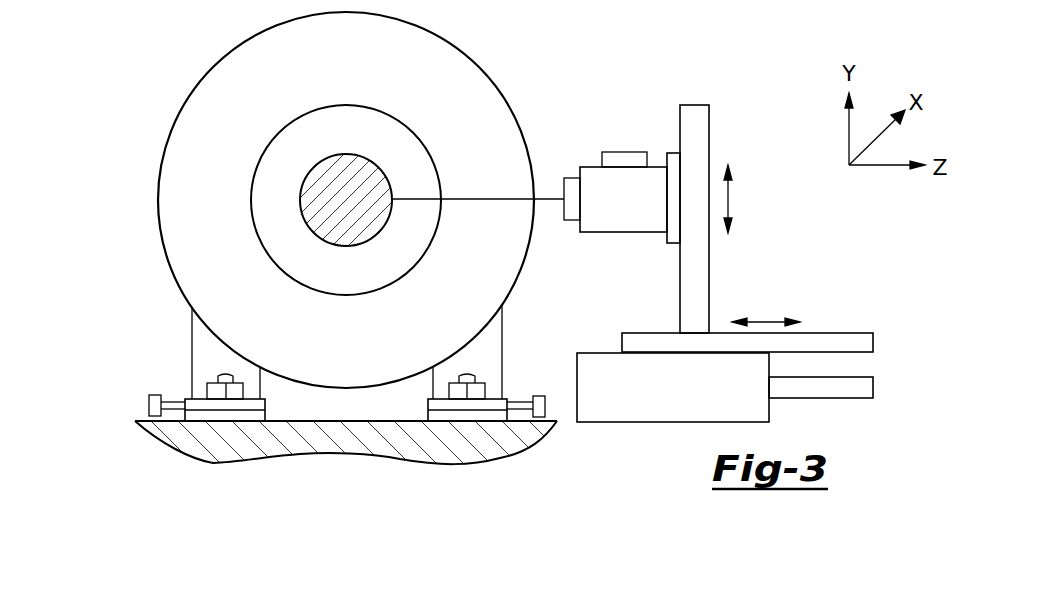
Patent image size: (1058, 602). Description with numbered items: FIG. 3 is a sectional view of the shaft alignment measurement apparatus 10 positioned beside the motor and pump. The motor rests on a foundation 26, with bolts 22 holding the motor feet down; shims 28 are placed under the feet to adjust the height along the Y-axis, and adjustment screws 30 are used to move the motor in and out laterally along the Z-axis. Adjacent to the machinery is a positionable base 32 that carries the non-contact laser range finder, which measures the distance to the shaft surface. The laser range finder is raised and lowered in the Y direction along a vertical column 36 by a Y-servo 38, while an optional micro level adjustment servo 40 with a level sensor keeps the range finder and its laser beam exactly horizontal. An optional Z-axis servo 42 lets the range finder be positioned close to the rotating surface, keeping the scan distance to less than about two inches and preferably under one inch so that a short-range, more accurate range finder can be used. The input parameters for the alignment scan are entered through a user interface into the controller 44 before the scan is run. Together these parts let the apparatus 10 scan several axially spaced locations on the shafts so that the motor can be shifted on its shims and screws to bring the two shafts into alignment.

The apparatus 10 is at (776, 247).
The bolts 22 is at (212, 381).
The foundation 26 is at (248, 440).
The shims 28 is at (265, 409).
The adjustment screws 30 is at (149, 405).
The positionable base 32 is at (640, 422).
The vertical column 36 is at (722, 118).
The Y-servo 38 is at (673, 243).
The micro level adjustment servo 40 is at (625, 152).
The Z-axis servo 42 is at (837, 333).
The controller 44 is at (850, 398).